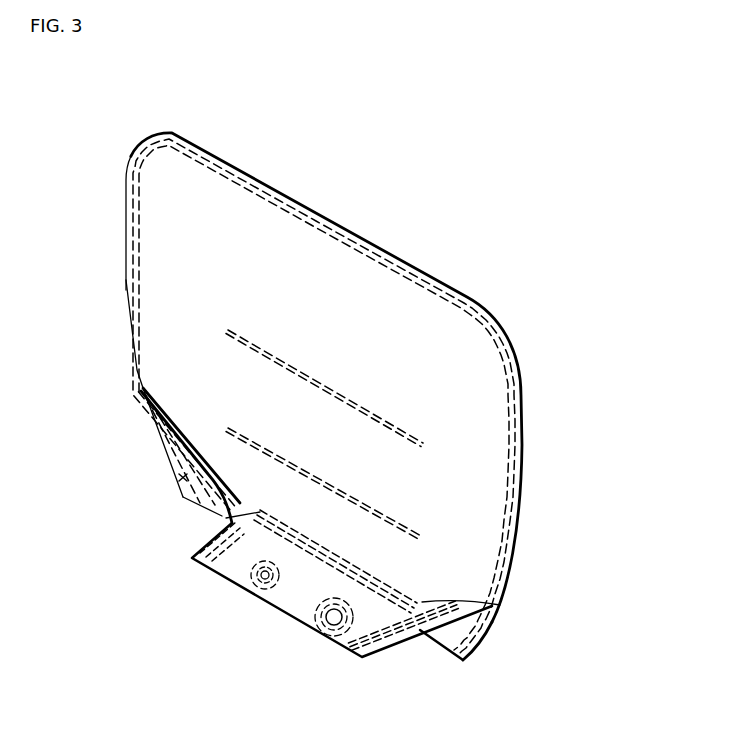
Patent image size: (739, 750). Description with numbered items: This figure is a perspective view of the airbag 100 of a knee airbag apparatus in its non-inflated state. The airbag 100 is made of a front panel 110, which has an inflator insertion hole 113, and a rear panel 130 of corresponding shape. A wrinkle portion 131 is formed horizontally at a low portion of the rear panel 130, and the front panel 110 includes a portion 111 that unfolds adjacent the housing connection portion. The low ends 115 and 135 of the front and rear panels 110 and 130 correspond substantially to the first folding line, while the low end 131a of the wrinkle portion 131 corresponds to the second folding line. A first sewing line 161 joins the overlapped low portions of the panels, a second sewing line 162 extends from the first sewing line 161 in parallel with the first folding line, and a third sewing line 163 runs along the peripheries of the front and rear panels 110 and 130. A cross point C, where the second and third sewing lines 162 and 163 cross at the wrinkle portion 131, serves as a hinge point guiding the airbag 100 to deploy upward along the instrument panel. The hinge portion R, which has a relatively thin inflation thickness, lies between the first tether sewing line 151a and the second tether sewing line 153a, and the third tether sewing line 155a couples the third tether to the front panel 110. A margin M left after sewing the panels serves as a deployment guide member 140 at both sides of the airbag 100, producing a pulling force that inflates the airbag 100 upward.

The airbag 100 is at (305, 182).
The front panel 110 is at (213, 192).
The portion 111 is at (217, 517).
The inflator insertion hole 113 is at (333, 617).
The low end 115 is at (220, 580).
The rear panel 130 is at (163, 450).
The wrinkle portion 131 is at (180, 480).
The low end of the wrinkle portion 131a is at (202, 513).
The low end 135 is at (362, 233).
The deployment guide member 140 is at (458, 617).
The first tether sewing line 151a is at (338, 571).
The second tether sewing line 153a is at (387, 578).
The third tether sewing line 155a is at (402, 424).
The first sewing line 161 is at (393, 645).
The second sewing line 162 is at (488, 628).
The third sewing line 163 is at (468, 310).
The margin M is at (150, 405).
The hinge portion R is at (374, 544).
The cross point C is at (482, 607).